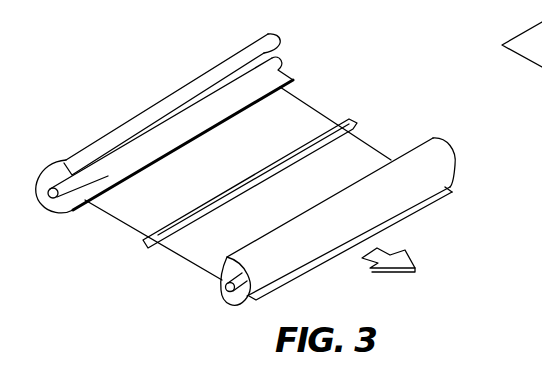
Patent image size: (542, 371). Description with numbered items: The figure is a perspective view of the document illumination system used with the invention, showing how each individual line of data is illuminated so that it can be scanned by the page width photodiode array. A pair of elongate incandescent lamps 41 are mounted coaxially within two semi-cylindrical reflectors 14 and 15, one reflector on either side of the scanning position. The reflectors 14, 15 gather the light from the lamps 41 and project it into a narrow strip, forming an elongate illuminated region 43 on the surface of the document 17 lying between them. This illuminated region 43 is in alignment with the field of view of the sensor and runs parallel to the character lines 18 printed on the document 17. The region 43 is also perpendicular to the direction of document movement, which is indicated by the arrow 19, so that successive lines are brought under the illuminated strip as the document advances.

The semi-cylindrical reflector 14 is at (247, 45).
The elongate incandescent lamp 41 is at (281, 62).
The document 17 is at (205, 175).
The character lines 18 is at (355, 130).
The elongate illuminated region 43 is at (357, 123).
The semi-cylindrical reflector 15 is at (447, 147).
The arrow indicating direction of document movement 19 is at (407, 254).